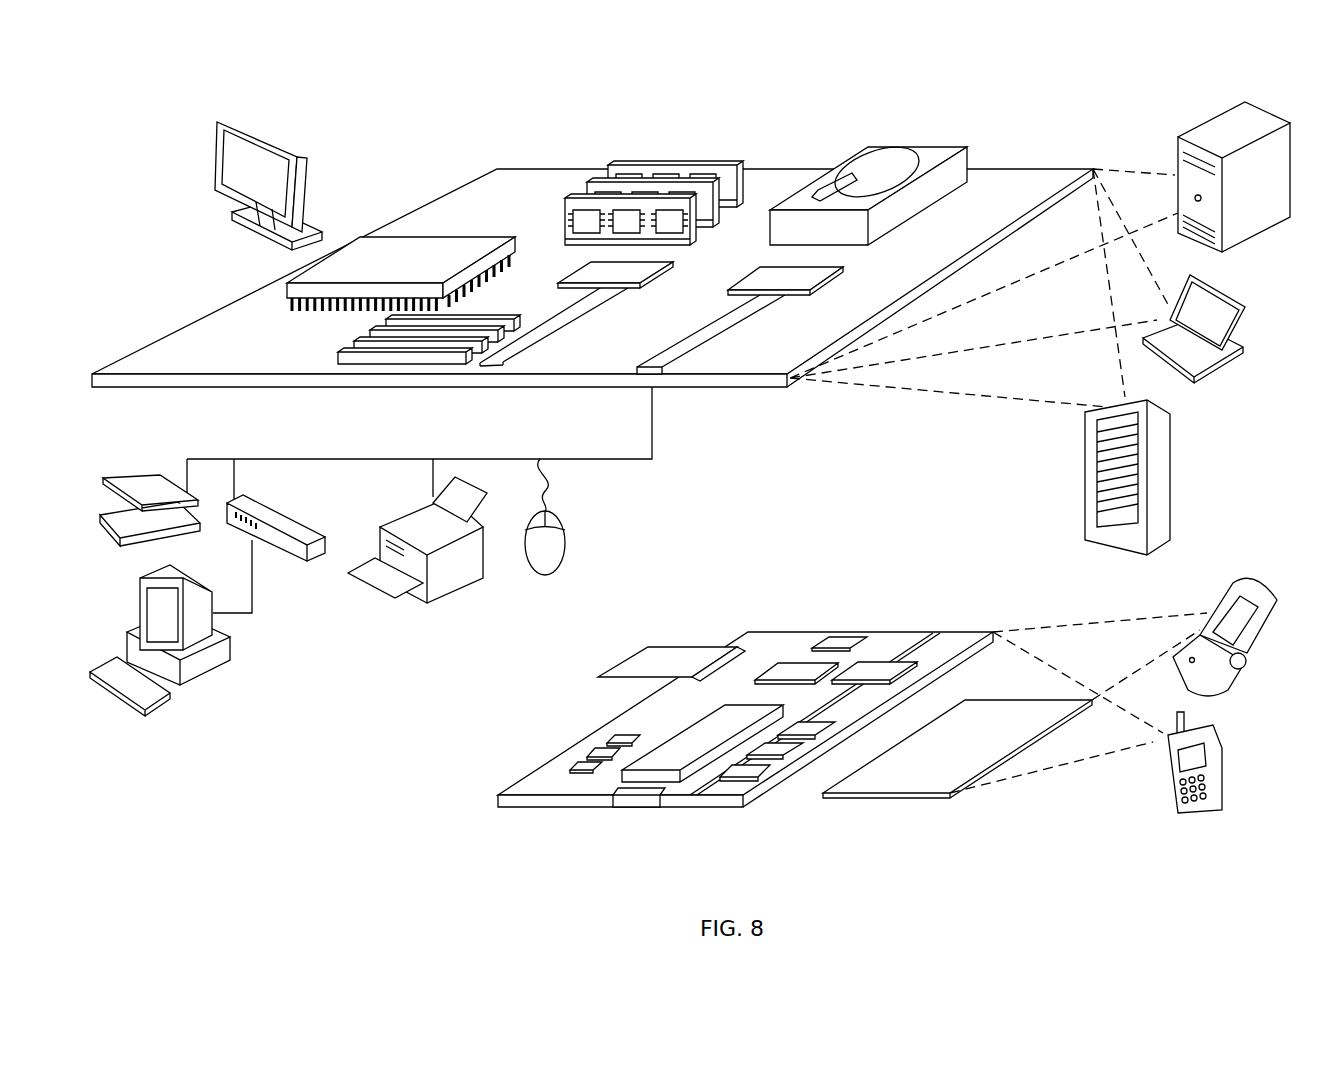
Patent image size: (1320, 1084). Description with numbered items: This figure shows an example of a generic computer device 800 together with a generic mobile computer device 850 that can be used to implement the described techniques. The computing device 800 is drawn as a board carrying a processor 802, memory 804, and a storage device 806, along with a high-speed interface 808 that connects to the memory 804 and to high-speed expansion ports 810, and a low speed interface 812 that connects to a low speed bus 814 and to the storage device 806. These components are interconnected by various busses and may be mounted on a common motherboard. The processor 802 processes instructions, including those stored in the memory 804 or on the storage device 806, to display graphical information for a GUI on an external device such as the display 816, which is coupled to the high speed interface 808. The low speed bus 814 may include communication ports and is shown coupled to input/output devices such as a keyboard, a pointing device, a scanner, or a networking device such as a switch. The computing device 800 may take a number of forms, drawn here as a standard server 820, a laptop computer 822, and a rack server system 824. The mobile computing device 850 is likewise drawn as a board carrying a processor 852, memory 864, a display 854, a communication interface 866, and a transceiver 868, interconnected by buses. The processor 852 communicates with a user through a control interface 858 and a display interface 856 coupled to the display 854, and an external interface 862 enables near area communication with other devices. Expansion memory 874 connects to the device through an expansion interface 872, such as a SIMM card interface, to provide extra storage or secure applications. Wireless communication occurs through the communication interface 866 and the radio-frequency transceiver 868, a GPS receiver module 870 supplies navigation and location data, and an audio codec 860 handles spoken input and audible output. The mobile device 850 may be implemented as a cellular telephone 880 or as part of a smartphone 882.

The computing device 800 is at (415, 142).
The processor 802 is at (290, 290).
The memory 804 is at (626, 166).
The storage device 806 is at (868, 163).
The high-speed interface 808 is at (595, 277).
The high-speed expansion ports 810 is at (340, 350).
The low speed interface 812 is at (766, 270).
The low speed bus 814 is at (662, 376).
The display 816 is at (226, 118).
The standard server 820 is at (1178, 152).
The laptop computer 822 is at (1250, 297).
The rack server system 824 is at (1088, 503).
The mobile computer device 850 is at (478, 804).
The processor 852 is at (675, 762).
The display 854 is at (915, 780).
The display interface 856 is at (745, 770).
The control interface 858 is at (785, 746).
The audio codec 860 is at (805, 727).
The external interface 862 is at (640, 797).
The memory 864 is at (598, 756).
The communication interface 866 is at (795, 669).
The transceiver 868 is at (870, 669).
The GPS receiver module 870 is at (846, 644).
The expansion interface 872 is at (724, 647).
The expansion memory 874 is at (658, 648).
The cellular telephone 880 is at (1227, 606).
The smartphone 882 is at (1166, 764).